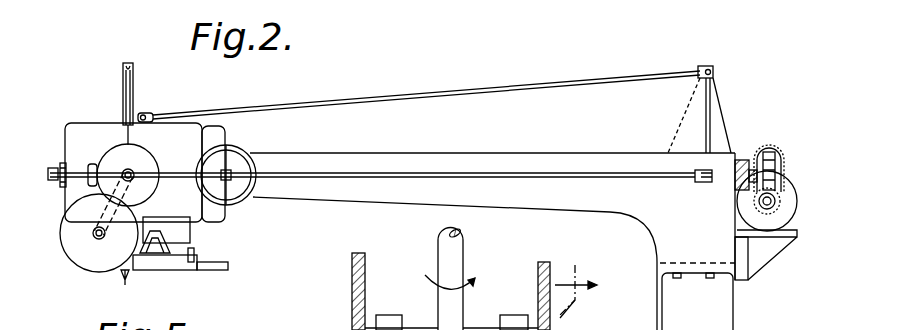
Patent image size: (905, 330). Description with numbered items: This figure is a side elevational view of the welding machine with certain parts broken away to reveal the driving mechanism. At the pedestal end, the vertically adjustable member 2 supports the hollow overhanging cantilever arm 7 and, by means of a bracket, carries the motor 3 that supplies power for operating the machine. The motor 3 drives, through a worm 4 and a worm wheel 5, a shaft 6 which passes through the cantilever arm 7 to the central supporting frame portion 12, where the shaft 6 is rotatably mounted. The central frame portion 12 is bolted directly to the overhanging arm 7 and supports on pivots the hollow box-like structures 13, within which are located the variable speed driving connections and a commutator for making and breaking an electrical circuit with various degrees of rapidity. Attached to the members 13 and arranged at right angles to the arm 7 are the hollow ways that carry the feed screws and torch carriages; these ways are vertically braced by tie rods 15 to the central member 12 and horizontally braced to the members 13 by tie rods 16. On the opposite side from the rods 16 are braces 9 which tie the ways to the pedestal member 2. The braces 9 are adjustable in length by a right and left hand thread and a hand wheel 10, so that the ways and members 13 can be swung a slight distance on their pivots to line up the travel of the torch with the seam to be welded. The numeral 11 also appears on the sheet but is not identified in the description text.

The member 2 is at (738, 327).
The motor 3 is at (785, 210).
The worm 4 is at (775, 195).
The worm wheel 5 is at (772, 150).
The shaft 6 is at (465, 250).
The cantaliver arm 7 is at (555, 153).
The braces 9 is at (412, 170).
The hand wheel 10 is at (235, 200).
The rod 11 is at (450, 93).
The central supporting frame portion 12 is at (576, 318).
The box-like structures 13 is at (170, 145).
The tie rods 15 is at (134, 92).
The tie rods 16 is at (73, 185).